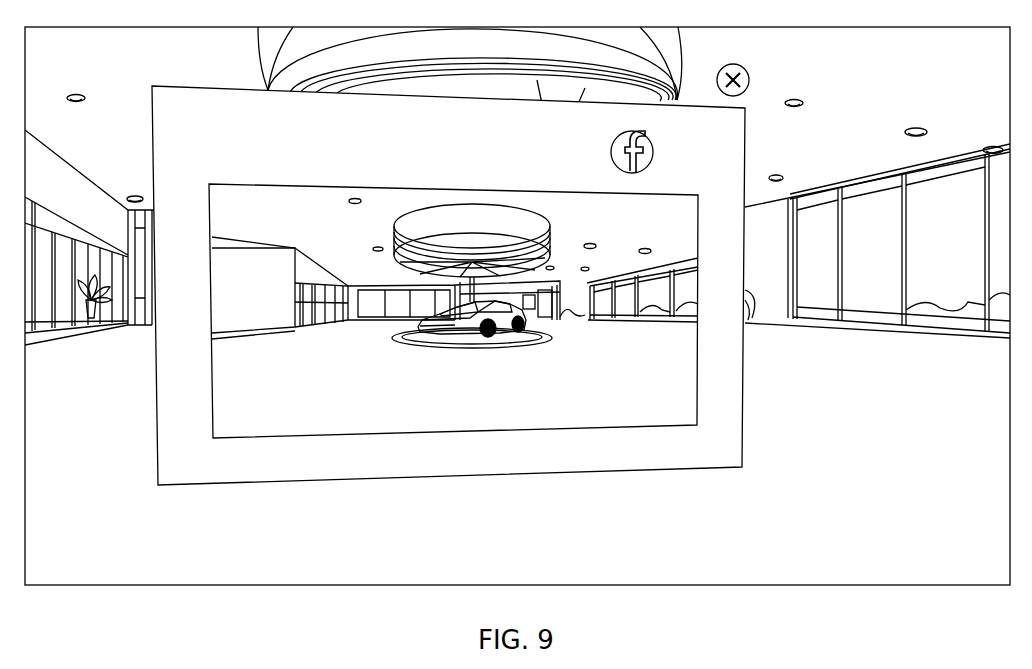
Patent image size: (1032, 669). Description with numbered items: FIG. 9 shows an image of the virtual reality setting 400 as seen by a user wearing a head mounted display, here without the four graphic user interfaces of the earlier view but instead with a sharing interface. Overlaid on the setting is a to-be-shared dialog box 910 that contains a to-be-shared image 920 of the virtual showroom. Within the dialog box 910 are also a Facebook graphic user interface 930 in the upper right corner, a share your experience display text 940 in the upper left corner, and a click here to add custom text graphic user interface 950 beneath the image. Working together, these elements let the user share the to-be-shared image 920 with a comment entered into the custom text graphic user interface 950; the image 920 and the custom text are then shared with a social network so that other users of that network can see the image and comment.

The virtual environment 400 is at (860, 152).
The to-be-shared dialog box 910 is at (688, 474).
The to-be-shared image 920 is at (702, 388).
The Facebook graphic user interface 930 is at (660, 148).
The share your experience display text 940 is at (219, 107).
The click here to add custom text graphic user interface 950 is at (496, 465).